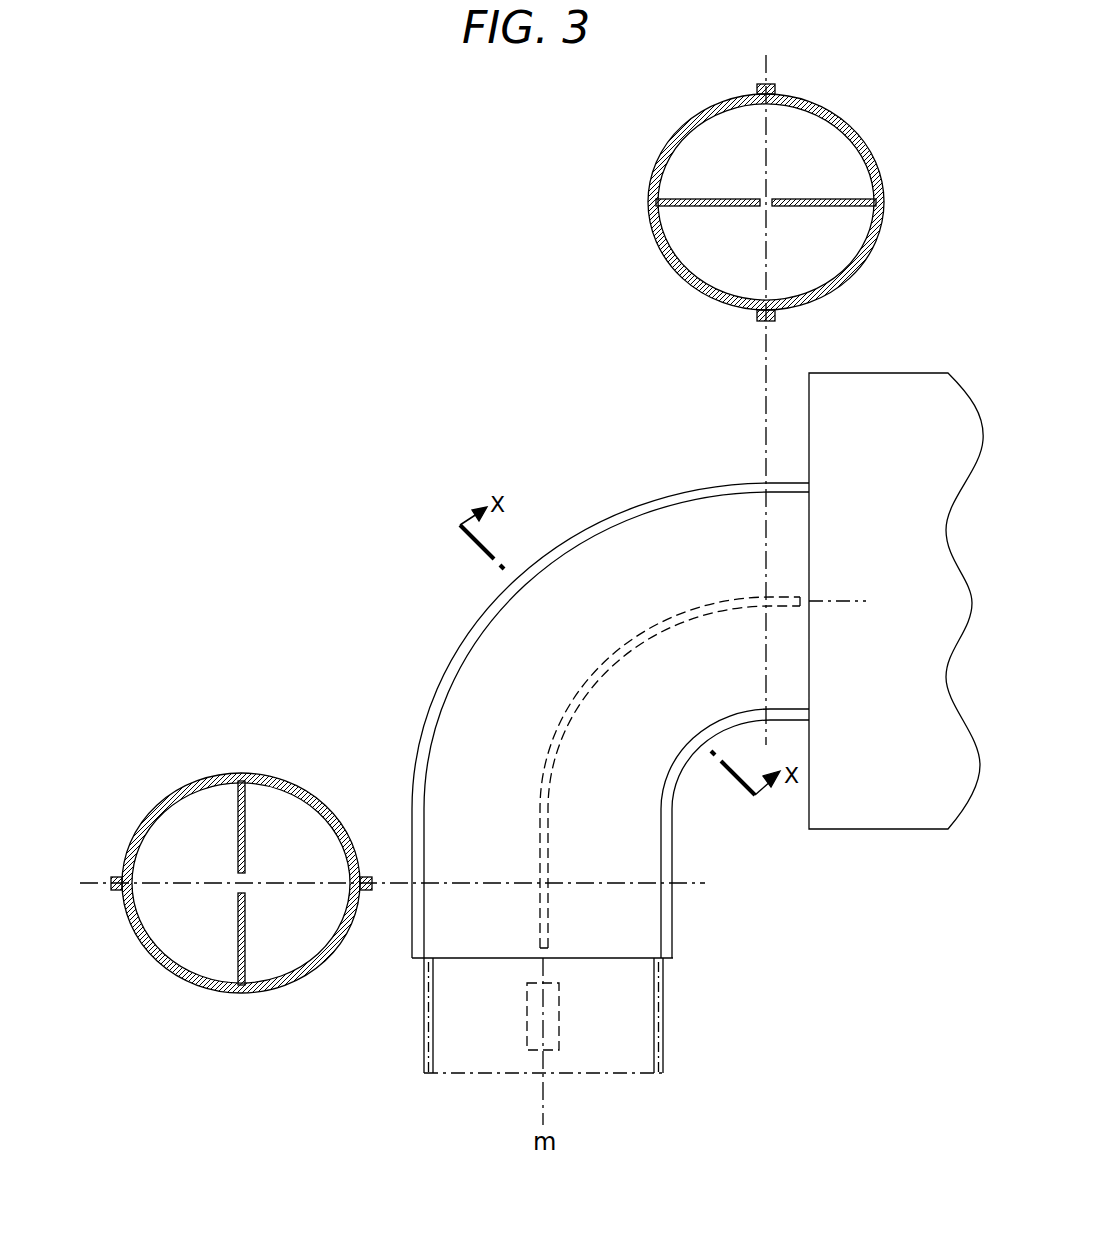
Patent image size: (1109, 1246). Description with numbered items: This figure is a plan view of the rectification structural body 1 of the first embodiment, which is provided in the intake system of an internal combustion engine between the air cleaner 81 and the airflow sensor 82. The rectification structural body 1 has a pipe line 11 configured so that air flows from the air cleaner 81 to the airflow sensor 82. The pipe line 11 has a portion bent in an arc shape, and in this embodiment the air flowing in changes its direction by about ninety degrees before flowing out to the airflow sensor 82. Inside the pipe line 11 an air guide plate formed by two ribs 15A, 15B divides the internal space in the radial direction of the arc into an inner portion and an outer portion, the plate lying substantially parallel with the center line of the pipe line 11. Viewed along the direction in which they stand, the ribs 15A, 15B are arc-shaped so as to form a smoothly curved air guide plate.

The rectification structural body 1 is at (489, 683).
The pipe line 11 is at (858, 121).
The rib 15A is at (544, 772).
The rib 15B is at (539, 778).
The air cleaner 81 is at (885, 403).
The airflow sensor 82 is at (560, 1021).